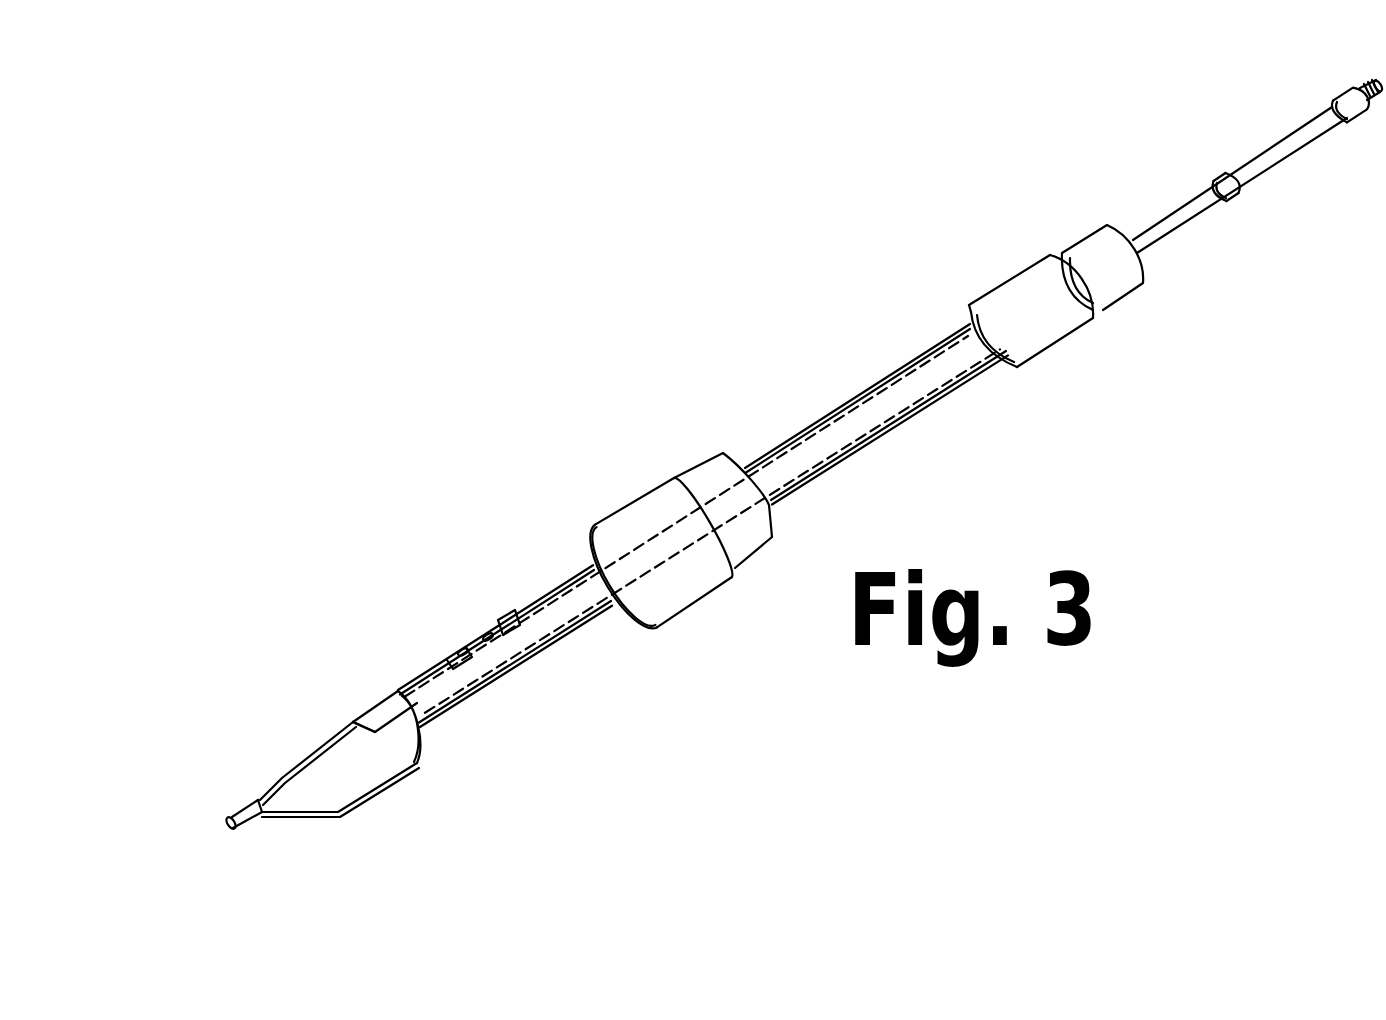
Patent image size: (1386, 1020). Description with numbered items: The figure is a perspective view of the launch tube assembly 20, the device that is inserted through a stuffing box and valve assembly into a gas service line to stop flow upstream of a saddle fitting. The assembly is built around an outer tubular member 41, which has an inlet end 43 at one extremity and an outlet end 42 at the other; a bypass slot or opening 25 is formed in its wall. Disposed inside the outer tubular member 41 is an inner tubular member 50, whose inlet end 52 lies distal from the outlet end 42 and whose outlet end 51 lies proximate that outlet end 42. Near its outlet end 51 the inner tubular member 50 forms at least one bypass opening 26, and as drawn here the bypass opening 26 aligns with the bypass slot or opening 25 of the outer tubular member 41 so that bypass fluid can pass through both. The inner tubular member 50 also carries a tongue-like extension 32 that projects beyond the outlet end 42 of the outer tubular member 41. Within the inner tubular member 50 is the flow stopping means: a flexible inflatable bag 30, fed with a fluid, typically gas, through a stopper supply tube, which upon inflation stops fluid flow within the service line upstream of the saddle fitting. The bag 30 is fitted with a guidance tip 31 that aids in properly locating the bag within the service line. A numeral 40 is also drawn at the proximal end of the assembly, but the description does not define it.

The launch tube assembly 20 is at (723, 290).
The bypass slot or opening 25 is at (500, 618).
The bypass opening 26 is at (466, 653).
The flexible inflatable bag 30 is at (418, 768).
The guidance tip 31 is at (243, 808).
The tongue-like extension 32 is at (363, 712).
The pull wire 40 is at (1128, 206).
The outer tubular member 41 is at (470, 700).
The outlet end 42 is at (398, 690).
The inlet end 43 is at (1085, 238).
The inner tubular member 50 is at (880, 440).
The outlet end 51 is at (419, 675).
The inlet end 52 is at (956, 326).